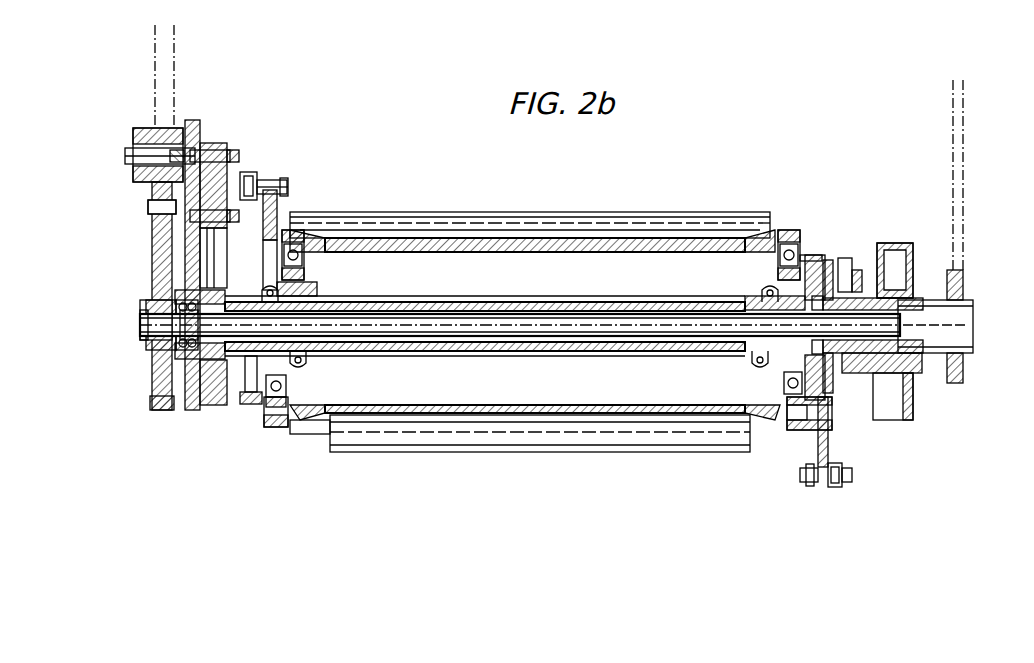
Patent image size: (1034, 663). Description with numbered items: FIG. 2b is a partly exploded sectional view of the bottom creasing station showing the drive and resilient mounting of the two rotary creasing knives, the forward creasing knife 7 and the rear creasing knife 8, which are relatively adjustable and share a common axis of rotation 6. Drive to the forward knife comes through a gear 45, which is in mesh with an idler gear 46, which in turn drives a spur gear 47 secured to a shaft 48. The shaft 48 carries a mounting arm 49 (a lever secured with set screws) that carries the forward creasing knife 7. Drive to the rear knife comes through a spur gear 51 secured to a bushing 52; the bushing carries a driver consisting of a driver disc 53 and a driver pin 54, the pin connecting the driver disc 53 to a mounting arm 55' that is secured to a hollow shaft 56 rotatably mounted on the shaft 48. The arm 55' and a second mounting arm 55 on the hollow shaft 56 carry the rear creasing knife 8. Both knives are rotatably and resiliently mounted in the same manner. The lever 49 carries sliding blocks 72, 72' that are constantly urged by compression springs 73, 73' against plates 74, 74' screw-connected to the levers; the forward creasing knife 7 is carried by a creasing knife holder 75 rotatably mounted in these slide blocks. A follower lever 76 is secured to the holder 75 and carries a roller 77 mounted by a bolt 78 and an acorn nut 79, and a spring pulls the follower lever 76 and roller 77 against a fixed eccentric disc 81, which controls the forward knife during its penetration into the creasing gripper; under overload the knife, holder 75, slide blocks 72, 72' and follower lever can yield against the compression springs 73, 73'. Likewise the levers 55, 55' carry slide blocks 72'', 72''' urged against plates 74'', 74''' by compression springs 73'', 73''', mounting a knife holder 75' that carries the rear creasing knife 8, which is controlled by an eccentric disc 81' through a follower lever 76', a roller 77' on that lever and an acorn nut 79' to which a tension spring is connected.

The common axis of rotation 6 is at (92, 352).
The forward creasing knife 7 is at (512, 443).
The rear creasing knife 8 is at (496, 212).
The gear 45 is at (150, 138).
The idler gear 46 is at (126, 238).
The spur gear 47 is at (130, 278).
The shaft 48 is at (486, 314).
The mounting arm 49 is at (282, 374).
The spur gear 51 is at (963, 276).
The bushing 52 is at (973, 320).
The driver disc 53 is at (828, 260).
The driver pin 54 is at (808, 256).
The mounting arm 55 is at (330, 290).
The mounting arm 55' is at (737, 290).
The hollow shaft 56 is at (456, 352).
The sliding block 72 is at (291, 432).
The sliding block 72' is at (779, 438).
The slide block 72'' is at (324, 228).
The slide block 72''' is at (805, 226).
The compression spring 73 is at (254, 410).
The compression spring 73' is at (769, 386).
The compression spring 73'' is at (329, 263).
The compression spring 73''' is at (759, 264).
The plate 74 is at (262, 436).
The plate 74' is at (795, 433).
The plate 74'' is at (313, 199).
The plate 74''' is at (759, 206).
The creasing knife holder 75 is at (535, 394).
The knife holder 75' is at (532, 215).
The follower lever 76 is at (848, 432).
The follower lever 76' is at (252, 240).
The roller 77 is at (824, 490).
The roller 77' is at (252, 160).
The bolt 78 is at (852, 476).
The acorn nut 79 is at (789, 484).
The acorn nut 79' is at (282, 167).
The eccentric disc 81 is at (861, 257).
The eccentric disc 81' is at (225, 396).